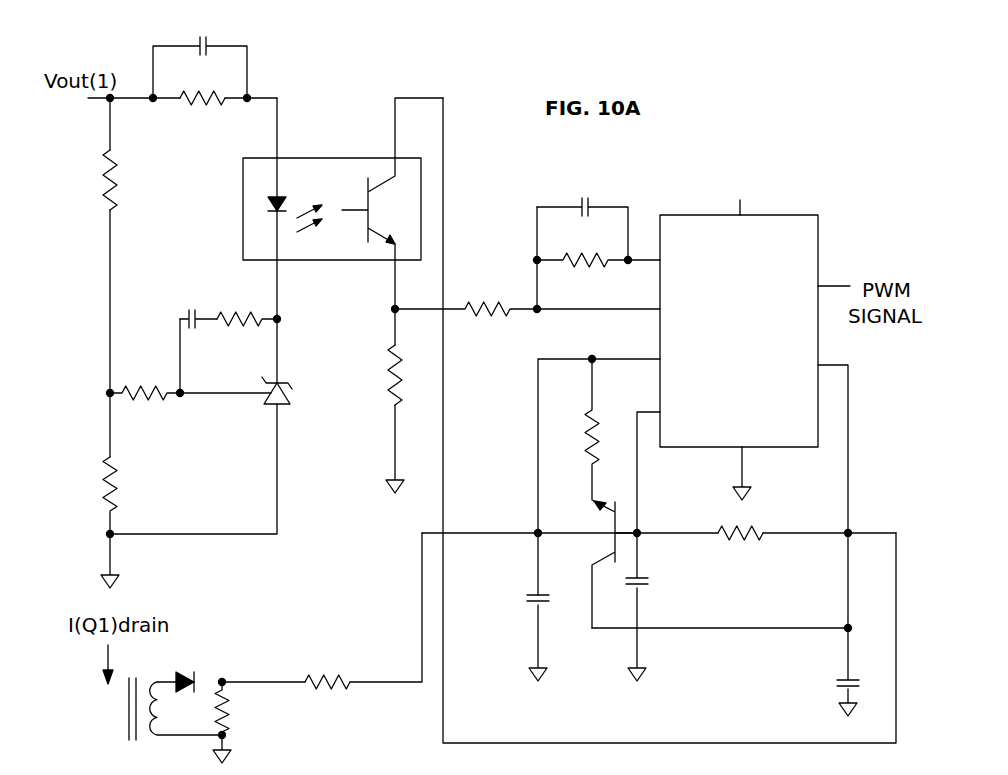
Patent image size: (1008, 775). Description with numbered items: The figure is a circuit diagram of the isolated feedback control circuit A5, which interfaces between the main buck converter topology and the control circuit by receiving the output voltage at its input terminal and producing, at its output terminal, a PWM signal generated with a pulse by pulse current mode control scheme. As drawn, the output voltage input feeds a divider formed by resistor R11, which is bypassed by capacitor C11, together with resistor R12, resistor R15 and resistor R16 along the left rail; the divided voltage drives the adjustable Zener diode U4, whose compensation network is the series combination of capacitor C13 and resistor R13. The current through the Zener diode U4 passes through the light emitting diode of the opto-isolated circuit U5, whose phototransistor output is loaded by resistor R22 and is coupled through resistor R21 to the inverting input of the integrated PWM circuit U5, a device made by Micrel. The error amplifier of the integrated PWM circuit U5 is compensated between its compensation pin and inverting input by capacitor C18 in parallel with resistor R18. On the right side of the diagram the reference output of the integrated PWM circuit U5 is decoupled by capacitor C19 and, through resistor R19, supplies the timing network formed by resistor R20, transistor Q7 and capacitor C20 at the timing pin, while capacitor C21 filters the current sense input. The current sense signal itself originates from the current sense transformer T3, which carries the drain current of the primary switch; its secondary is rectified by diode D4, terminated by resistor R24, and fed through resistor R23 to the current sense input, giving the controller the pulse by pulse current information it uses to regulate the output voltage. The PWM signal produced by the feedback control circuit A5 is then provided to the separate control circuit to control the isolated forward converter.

The isolated feedback control circuit A5 is at (778, 141).
The resistor R11 is at (202, 115).
The capacitor C11 is at (200, 54).
The resistor R12 is at (137, 180).
The resistor R13 is at (247, 337).
The capacitor C13 is at (192, 302).
The resistor R15 is at (145, 411).
The resistor R16 is at (137, 484).
The adjustable Zener diode U4 is at (254, 395).
The opto-isolated circuit / integrated PWM circuit U5 is at (546, 299).
The resistor R22 is at (371, 375).
The resistor R21 is at (527, 326).
The capacitor C18 is at (582, 212).
The resistor R18 is at (598, 245).
The resistor R20 is at (573, 411).
The transistor Q7 is at (614, 544).
The capacitor C21 is at (523, 586).
The capacitor C20 is at (658, 595).
The resistor R19 is at (740, 548).
The capacitor C19 is at (823, 680).
The current sense transformer T3 is at (156, 709).
The diode D4 is at (184, 665).
The resistor R24 is at (245, 722).
The resistor R23 is at (327, 699).